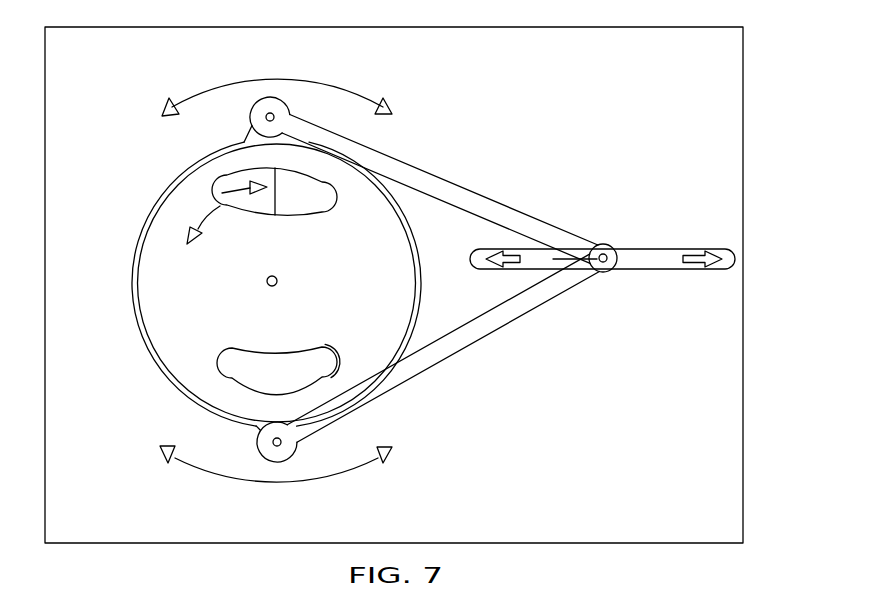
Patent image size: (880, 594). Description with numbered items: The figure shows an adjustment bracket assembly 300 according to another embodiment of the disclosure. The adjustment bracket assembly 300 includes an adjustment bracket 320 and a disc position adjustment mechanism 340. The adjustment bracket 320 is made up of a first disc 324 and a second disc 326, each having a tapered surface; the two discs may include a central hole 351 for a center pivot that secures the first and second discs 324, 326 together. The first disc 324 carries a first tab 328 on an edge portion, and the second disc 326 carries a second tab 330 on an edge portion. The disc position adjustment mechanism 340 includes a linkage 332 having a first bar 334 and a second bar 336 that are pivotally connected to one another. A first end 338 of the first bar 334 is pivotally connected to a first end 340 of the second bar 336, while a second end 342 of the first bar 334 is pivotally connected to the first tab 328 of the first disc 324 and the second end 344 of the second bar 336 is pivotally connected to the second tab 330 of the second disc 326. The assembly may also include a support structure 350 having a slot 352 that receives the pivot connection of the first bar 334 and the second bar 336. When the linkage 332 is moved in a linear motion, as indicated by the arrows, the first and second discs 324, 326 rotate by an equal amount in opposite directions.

The adjustment bracket assembly 300 is at (441, 136).
The adjustment bracket 320 is at (148, 350).
The first disc 324 is at (180, 368).
The second disc 326 is at (158, 202).
The first tab 328 is at (257, 429).
The second tab 330 is at (248, 120).
The linkage 332 is at (557, 218).
The first bar 334 is at (468, 335).
The second bar 336 is at (467, 201).
The first end of the first bar 338 is at (572, 280).
The disc position adjustment mechanism 340 is at (512, 208).
The second end of the first bar 342 is at (293, 437).
The second end of the second bar 344 is at (440, 156).
The support structure 350 is at (713, 100).
The central hole 351 is at (267, 282).
The slot 352 is at (681, 249).